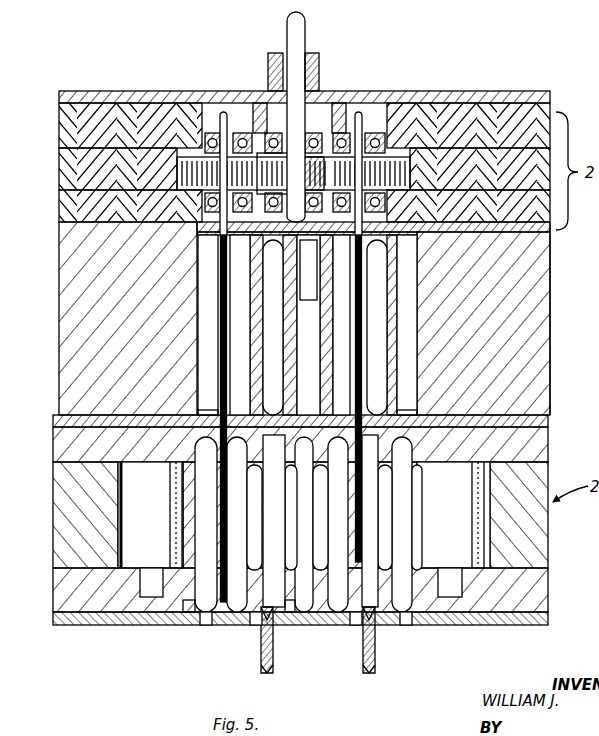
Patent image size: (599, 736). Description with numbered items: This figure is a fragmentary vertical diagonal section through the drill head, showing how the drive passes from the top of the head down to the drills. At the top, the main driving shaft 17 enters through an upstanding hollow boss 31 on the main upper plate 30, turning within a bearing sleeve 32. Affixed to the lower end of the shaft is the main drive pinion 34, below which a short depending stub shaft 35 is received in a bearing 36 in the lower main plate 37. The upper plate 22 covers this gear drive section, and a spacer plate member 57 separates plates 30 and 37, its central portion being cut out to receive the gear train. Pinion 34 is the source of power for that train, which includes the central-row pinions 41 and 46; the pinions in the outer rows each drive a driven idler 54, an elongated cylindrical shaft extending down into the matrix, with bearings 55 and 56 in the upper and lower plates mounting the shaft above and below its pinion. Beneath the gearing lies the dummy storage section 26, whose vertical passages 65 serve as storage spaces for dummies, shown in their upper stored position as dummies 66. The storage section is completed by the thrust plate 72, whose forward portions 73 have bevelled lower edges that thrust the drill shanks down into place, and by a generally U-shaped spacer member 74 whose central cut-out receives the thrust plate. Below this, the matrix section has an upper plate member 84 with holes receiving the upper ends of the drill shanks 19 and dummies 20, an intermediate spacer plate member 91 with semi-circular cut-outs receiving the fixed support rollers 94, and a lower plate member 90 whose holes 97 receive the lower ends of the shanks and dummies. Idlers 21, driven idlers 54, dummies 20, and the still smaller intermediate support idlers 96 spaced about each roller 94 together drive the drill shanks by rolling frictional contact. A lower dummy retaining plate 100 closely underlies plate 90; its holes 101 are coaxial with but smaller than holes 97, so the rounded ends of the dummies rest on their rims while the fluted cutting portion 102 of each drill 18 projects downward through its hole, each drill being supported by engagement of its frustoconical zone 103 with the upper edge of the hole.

The main driving shaft 17 is at (303, 34).
The bearing sleeve 32 is at (268, 60).
The upstanding hollow boss 31 is at (318, 62).
The main drive pinion 34 is at (303, 160).
The bearings 55 is at (205, 133).
The upper plate 22 is at (492, 101).
The main upper plate 30 is at (70, 122).
The spacer plate member 57 is at (78, 162).
The pinion 41 is at (180, 170).
The pinion 46 is at (410, 172).
The lower main plate 37 is at (68, 207).
The bearings 56 is at (205, 203).
The driven idler 54 is at (224, 284).
The bearing 36 is at (240, 237).
The stub shaft 35 is at (305, 236).
The dummies in stored position 66 is at (272, 358).
The vertical passages 65 is at (240, 335).
The dummy storage section 26 is at (553, 325).
The intermediate spacer plate member 91 is at (540, 357).
The thrust plate 72 is at (208, 412).
The forward portions 73 is at (337, 420).
The spacer member 74 is at (60, 421).
The upper plate member 84 is at (530, 455).
The intermediate support idlers 96 is at (182, 478).
The dummies 20 is at (237, 493).
The idlers 21 is at (255, 520).
The drill shanks 19 is at (268, 530).
The fixed support rollers 94 is at (137, 555).
The lower plate member 90 is at (530, 605).
The lower dummy retaining plate 100 is at (540, 626).
The holes 97 is at (190, 626).
The holes 101 is at (203, 628).
The frustoconical zone 103 is at (248, 626).
The drills 18 is at (258, 655).
The fluted cutting portion 102 is at (262, 670).